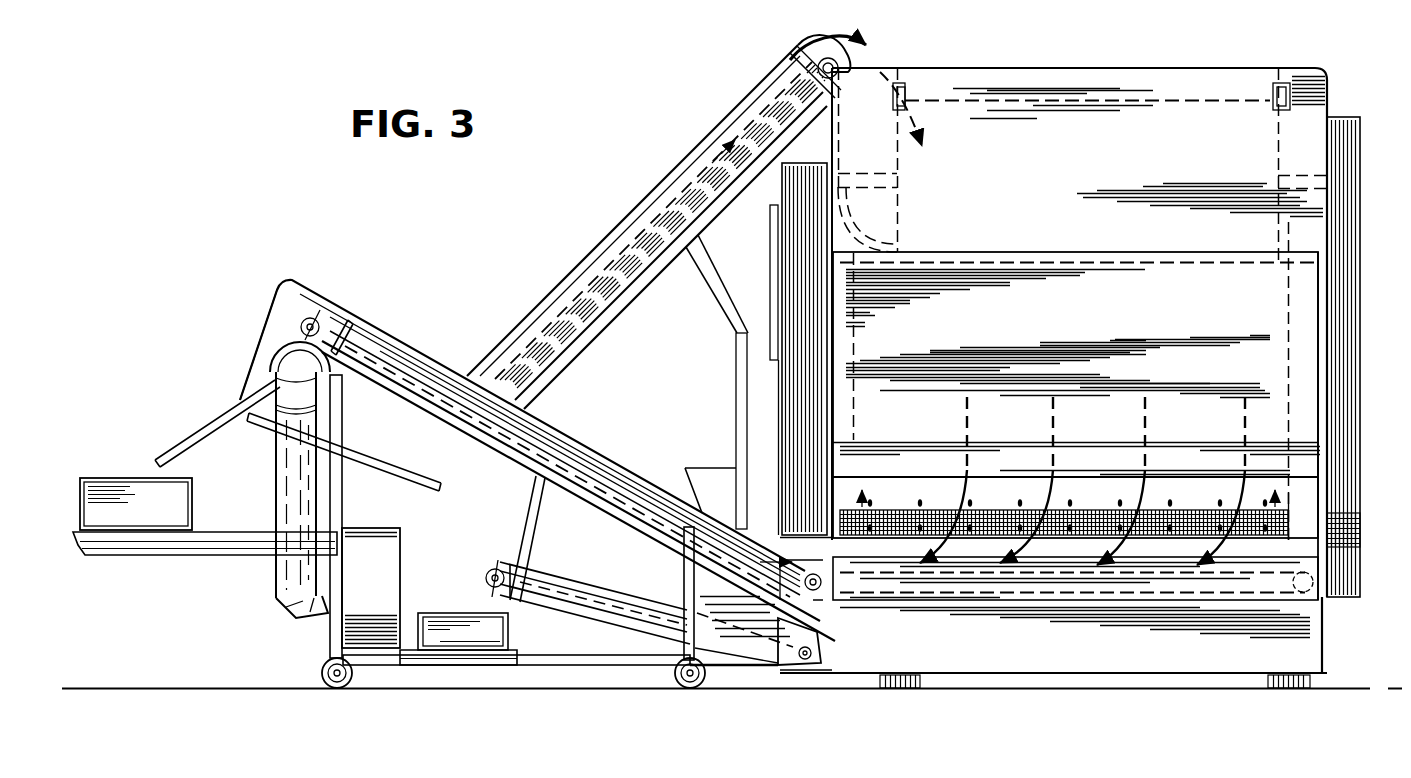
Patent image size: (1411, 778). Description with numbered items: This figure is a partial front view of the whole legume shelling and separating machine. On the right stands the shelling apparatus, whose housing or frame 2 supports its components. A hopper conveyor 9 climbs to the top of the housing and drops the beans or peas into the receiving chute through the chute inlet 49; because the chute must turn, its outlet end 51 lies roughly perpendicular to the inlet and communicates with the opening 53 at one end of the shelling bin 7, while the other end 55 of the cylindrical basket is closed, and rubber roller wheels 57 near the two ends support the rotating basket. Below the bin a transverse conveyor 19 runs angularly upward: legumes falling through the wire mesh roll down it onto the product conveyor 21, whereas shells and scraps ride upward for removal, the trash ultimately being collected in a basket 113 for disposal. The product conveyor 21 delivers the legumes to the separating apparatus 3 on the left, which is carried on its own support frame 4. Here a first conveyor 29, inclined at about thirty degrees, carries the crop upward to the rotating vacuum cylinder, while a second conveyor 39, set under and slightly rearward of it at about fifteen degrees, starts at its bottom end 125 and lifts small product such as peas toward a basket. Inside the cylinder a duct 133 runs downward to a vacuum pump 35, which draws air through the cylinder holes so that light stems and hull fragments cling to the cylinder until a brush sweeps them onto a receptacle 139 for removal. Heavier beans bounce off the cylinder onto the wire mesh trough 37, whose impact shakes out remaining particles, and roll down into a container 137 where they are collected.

The housing or frame 2 is at (1360, 378).
The separating apparatus 3 is at (412, 302).
The support frame 4 is at (532, 548).
The shelling bin 7 is at (1115, 156).
The hopper conveyor 9 is at (607, 236).
The transverse conveyor 19 is at (1290, 499).
The product conveyor 21 is at (1272, 592).
The first conveyor 29 is at (570, 439).
The vacuum pump 35 is at (402, 552).
The wire mesh trough 37 is at (197, 427).
The second conveyor 39 is at (600, 625).
The chute inlet 49 is at (878, 60).
The outlet end 51 is at (890, 152).
The opening 53 is at (900, 213).
The other end 55 is at (1280, 130).
The rubber roller wheels 57 is at (905, 88).
The basket 113 is at (710, 467).
The end 125 is at (803, 677).
The duct 133 is at (290, 497).
The container 137 is at (112, 478).
The removal receptacle 139 is at (393, 465).